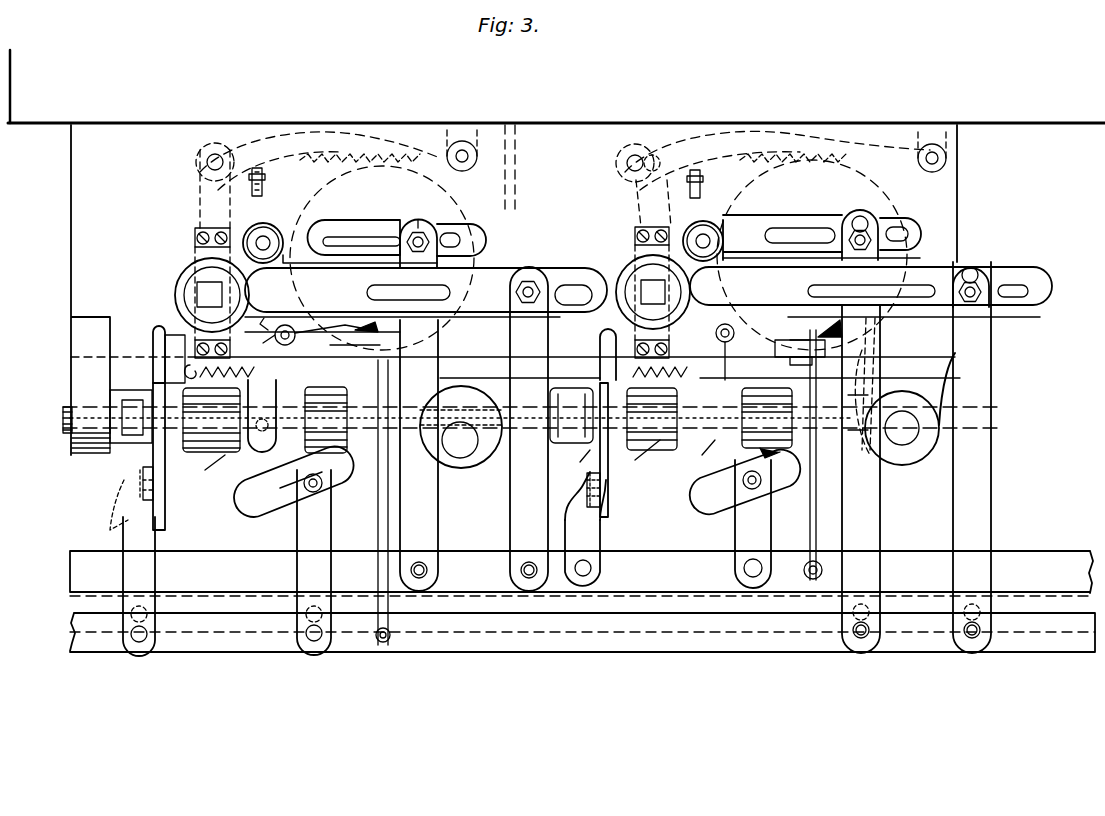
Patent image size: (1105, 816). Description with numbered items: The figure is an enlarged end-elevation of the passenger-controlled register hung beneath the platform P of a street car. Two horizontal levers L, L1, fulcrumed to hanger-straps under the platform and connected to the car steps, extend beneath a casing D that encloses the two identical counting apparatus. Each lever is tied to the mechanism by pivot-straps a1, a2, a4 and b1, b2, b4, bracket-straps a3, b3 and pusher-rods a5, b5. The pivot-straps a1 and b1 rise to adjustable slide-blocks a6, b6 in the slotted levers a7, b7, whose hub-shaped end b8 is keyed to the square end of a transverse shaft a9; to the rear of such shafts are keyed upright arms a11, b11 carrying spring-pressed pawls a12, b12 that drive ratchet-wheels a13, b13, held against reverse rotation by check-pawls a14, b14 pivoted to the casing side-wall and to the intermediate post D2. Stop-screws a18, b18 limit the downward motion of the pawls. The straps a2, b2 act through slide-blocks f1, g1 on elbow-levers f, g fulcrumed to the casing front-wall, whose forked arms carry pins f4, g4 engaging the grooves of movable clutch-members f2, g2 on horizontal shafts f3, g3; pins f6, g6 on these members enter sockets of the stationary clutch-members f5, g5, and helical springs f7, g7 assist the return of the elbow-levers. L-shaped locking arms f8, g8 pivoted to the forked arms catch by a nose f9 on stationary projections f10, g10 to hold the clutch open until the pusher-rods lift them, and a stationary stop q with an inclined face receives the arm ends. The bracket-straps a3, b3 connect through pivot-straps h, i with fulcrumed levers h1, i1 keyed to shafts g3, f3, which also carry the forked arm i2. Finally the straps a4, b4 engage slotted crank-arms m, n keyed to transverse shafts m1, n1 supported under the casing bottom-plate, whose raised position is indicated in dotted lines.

The platform P is at (556, 86).
The casing D is at (975, 172).
The intermediate post D2 is at (509, 178).
The horizontal lever L is at (635, 646).
The horizontal lever L1 is at (90, 570).
The pivot-strap a1 is at (990, 512).
The pivot-strap a2 is at (865, 222).
The bracket-strap a3 is at (128, 520).
The pivot-strap a4 is at (331, 528).
The pusher-rod a5 is at (390, 528).
The adjustable slide-block a6 is at (975, 280).
The lever a7 is at (1030, 280).
The transverse shaft a9 is at (653, 292).
The upright arm a11 is at (640, 205).
The pawl a12 is at (715, 138).
The ratchet-wheel a13 is at (812, 252).
The check-pawl a14 is at (905, 155).
The stop-screw a18 is at (710, 178).
The pivot-strap b1 is at (528, 278).
The pivot-strap b2 is at (205, 292).
The bracket-strap b3 is at (600, 533).
The pivot-strap b4 is at (760, 522).
The pusher-rod b5 is at (818, 506).
The adjustable slide-block b6 is at (565, 280).
The lever b7 is at (600, 262).
The hub-shaped end b8 is at (195, 278).
The upright arm b11 is at (200, 205).
The pawl b12 is at (302, 137).
The ratchet-wheel b13 is at (382, 252).
The check-pawl b14 is at (462, 152).
The stop-screw b18 is at (262, 178).
The elbow-lever f is at (745, 240).
The adjustable slide-block f1 is at (895, 222).
The movable clutch-member f2 is at (702, 453).
The horizontal shaft f3 is at (905, 395).
The pin f4 is at (640, 456).
The stationary clutch-member f5 is at (579, 466).
The pin f6 is at (652, 419).
The helical spring f7 is at (630, 374).
The locking arm f8 is at (905, 335).
The projecting nose f9 is at (802, 325).
The stationary projection f10 is at (796, 361).
The elbow-lever g is at (488, 243).
The adjustable slide-block g1 is at (440, 230).
The movable clutch-member g2 is at (62, 414).
The horizontal shaft g3 is at (468, 420).
The pin g4 is at (262, 416).
The stationary clutch-member g5 is at (385, 467).
The pin g6 is at (211, 417).
The helical spring g7 is at (207, 364).
The locking arm g8 is at (430, 330).
The stationary projection g10 is at (349, 338).
The pivot-strap h is at (170, 515).
The fulcrumed lever h1 is at (131, 406).
The pivot-strap i is at (610, 496).
The fulcrumed lever i1 is at (562, 462).
The forked arm i2 is at (795, 395).
The crank-arm m is at (255, 500).
The transverse shaft m1 is at (462, 440).
The crank-arm n is at (700, 505).
The transverse shaft n1 is at (910, 409).
The stationary stop q is at (850, 320).